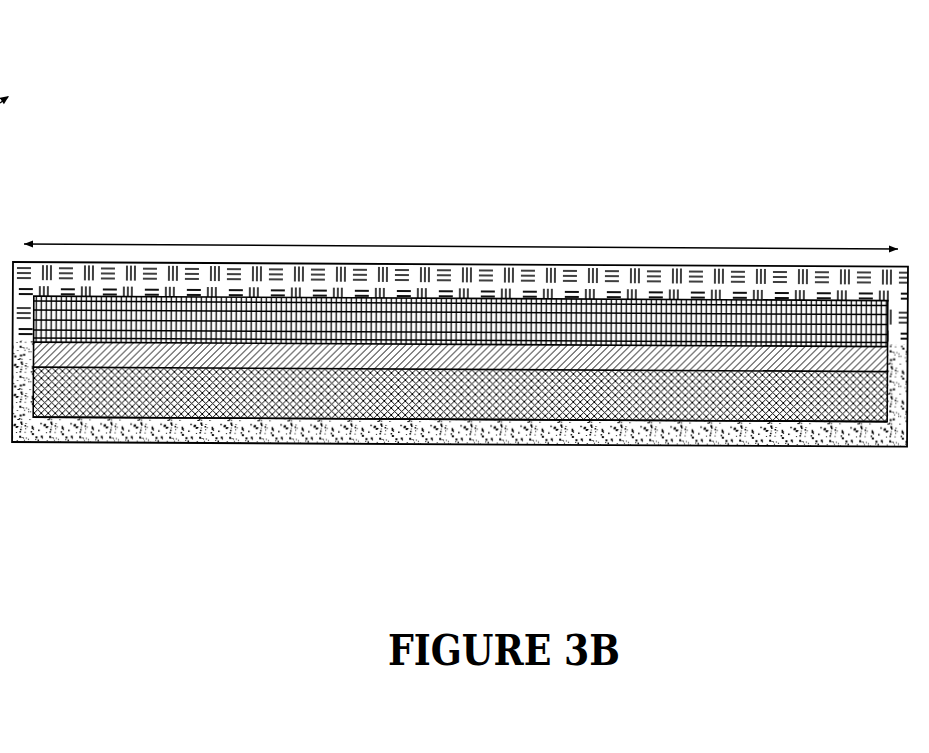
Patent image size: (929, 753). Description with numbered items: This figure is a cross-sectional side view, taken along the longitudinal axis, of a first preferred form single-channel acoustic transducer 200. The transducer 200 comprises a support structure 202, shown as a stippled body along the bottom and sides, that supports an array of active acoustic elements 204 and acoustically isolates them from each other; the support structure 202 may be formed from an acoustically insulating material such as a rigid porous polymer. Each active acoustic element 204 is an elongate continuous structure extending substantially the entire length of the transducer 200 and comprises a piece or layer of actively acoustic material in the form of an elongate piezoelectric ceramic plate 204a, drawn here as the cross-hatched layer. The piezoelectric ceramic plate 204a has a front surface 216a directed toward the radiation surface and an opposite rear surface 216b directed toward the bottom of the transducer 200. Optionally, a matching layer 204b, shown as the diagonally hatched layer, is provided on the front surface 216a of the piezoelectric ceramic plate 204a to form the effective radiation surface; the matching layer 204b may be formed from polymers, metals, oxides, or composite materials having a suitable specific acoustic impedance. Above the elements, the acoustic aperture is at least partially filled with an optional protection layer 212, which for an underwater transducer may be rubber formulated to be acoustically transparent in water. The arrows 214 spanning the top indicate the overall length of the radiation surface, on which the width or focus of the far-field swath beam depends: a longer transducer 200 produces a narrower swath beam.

The acoustic transducer 200 is at (773, 130).
The support structure 202 is at (852, 431).
The active acoustic elements 204 is at (459, 439).
The piezoelectric ceramic plate 204a is at (708, 395).
The matching layer 204b is at (738, 362).
The protection layer 212 is at (868, 283).
The arrows indicating overall length of the radiation surface 214 is at (461, 238).
The front surface 216a is at (318, 362).
The rear surface 216b is at (398, 422).